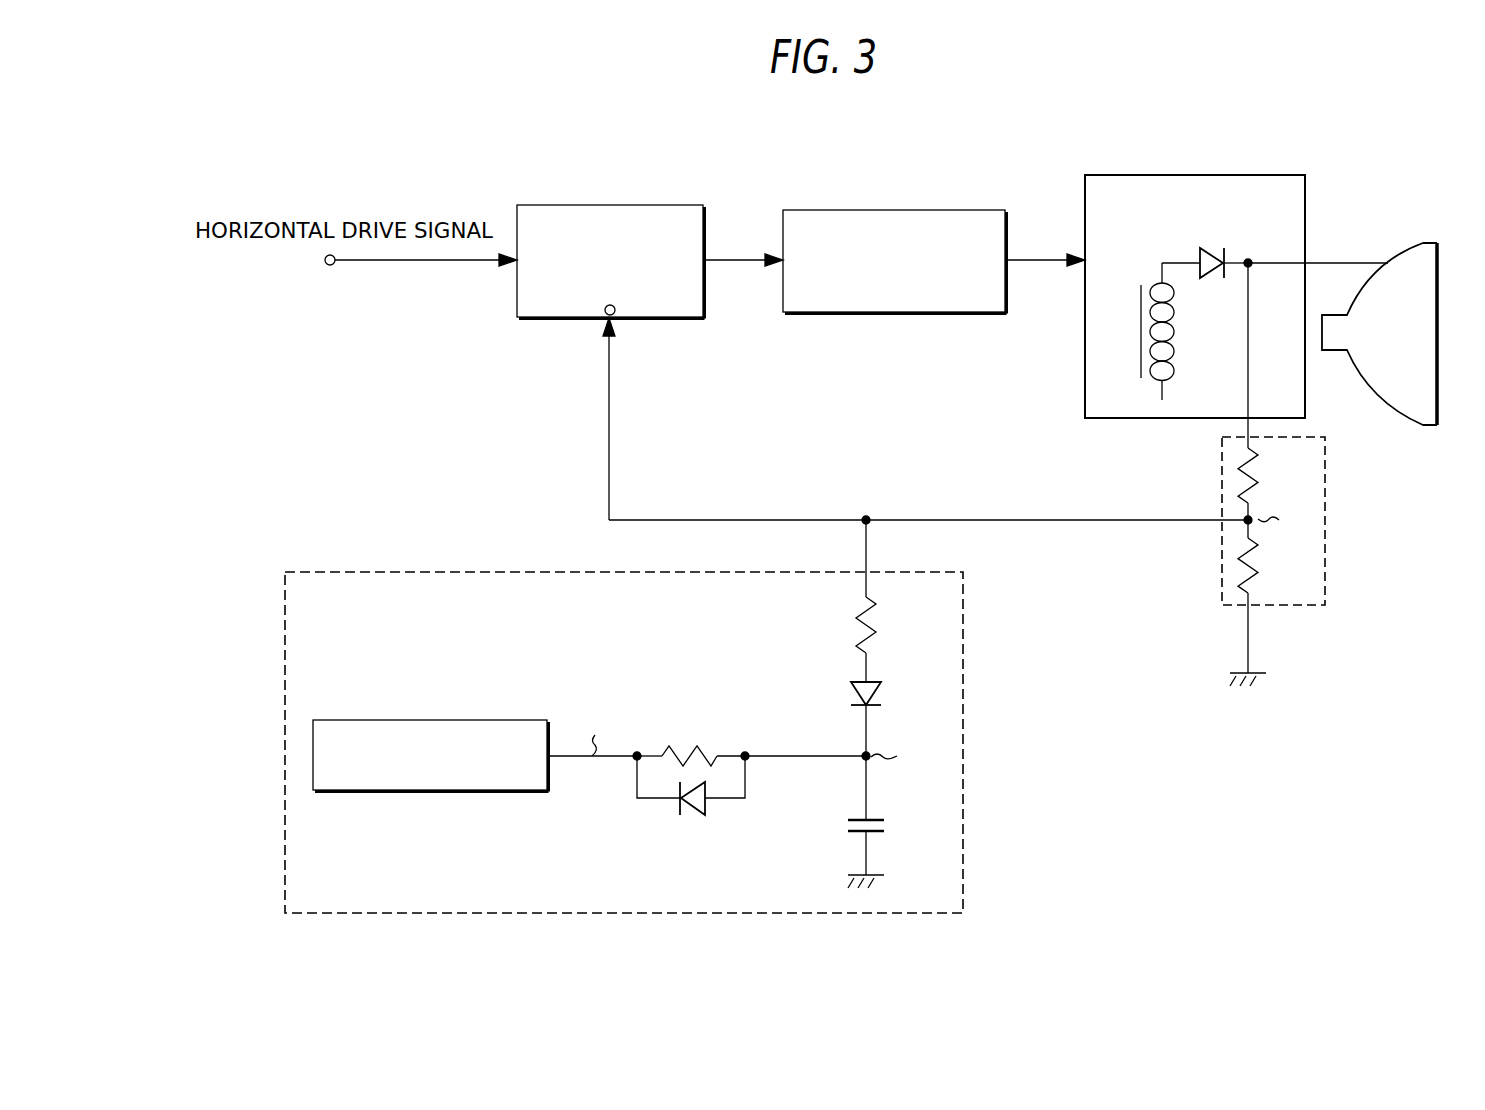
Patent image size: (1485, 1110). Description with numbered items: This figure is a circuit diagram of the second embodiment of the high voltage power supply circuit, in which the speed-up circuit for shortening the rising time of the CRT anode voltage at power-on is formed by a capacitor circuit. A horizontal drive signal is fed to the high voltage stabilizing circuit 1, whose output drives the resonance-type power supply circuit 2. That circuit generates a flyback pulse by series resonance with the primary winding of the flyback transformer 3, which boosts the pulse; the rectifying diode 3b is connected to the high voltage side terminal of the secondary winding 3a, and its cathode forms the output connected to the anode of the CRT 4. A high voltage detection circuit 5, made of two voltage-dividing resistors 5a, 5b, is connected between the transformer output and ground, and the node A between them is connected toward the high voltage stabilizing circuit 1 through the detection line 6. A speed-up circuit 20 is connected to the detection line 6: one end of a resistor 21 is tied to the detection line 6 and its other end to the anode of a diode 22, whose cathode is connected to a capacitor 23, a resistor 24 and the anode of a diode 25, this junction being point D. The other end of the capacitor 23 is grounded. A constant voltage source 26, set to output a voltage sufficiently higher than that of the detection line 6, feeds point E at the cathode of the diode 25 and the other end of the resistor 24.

The high voltage stabilizing circuit 1 is at (608, 206).
The resonance-type power supply circuit 2 is at (891, 210).
The flyback transformer 3 is at (1195, 271).
The secondary winding 3a is at (1142, 328).
The rectifying diode 3b is at (1208, 246).
The CRT 4 is at (1422, 242).
The high voltage detection circuit 5 is at (1251, 474).
The voltage-dividing resistor 5a is at (1261, 475).
The voltage-dividing resistor 5b is at (1261, 563).
The detection line 6 is at (714, 519).
The speed-up circuit 20 is at (655, 714).
The resistor 21 is at (876, 623).
The diode 22 is at (850, 697).
The capacitor 23 is at (885, 828).
The resistor 24 is at (699, 750).
The diode 25 is at (676, 812).
The constant voltage source 26 is at (429, 720).